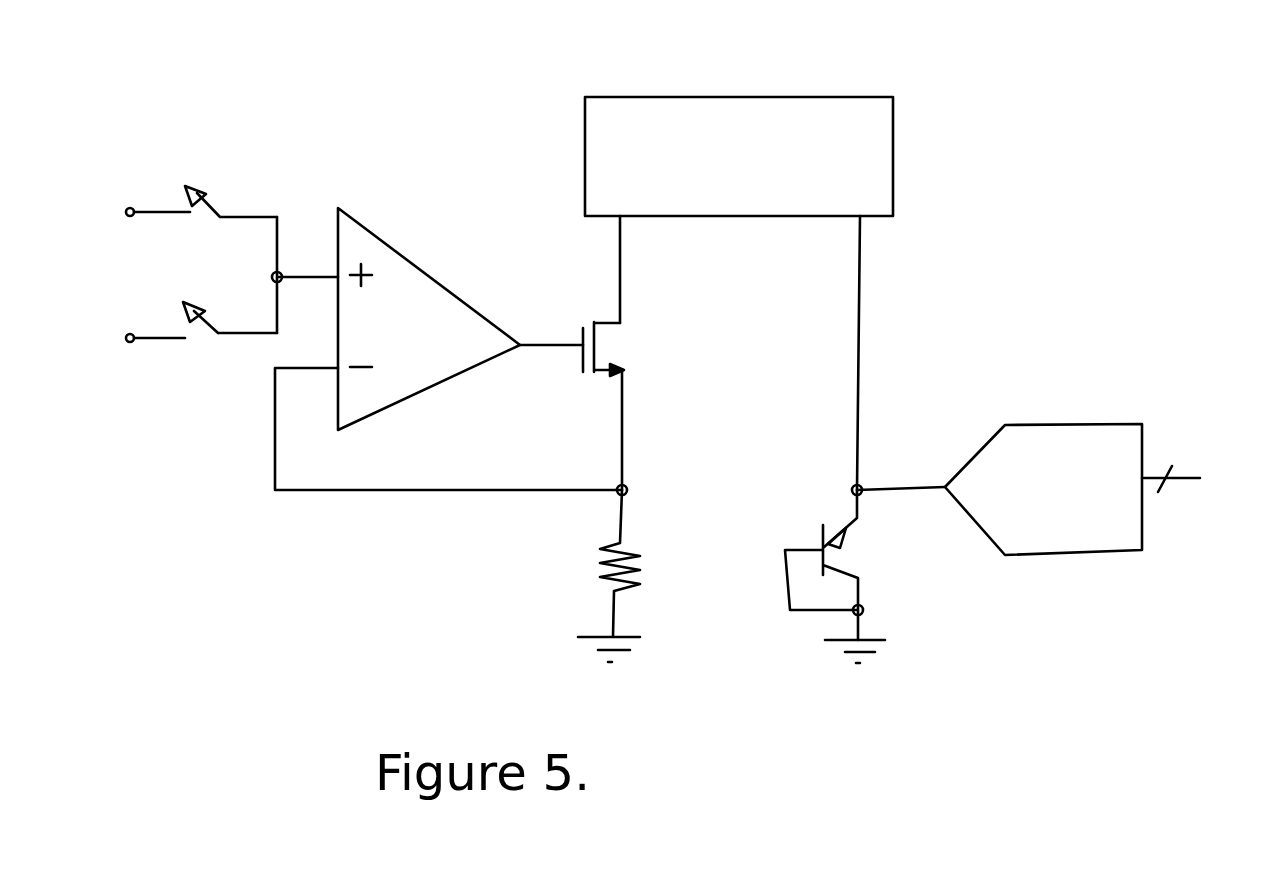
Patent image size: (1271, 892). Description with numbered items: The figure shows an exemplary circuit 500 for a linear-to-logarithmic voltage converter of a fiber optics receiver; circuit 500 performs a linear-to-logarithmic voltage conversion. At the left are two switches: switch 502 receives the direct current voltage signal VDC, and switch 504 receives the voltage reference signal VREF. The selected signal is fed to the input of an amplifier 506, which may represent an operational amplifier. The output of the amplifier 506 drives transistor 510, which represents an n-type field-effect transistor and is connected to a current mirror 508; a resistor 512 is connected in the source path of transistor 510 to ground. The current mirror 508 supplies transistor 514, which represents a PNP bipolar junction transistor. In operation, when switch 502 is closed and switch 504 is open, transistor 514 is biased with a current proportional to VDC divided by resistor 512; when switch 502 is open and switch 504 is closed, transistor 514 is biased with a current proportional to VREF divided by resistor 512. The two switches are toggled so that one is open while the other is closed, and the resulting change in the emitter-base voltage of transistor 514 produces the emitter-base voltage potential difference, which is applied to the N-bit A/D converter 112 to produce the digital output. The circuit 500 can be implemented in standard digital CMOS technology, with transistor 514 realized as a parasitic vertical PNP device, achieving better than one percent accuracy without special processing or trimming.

The circuit 500 is at (775, 730).
The switch 502 is at (195, 166).
The switch 504 is at (203, 345).
The amplifier 506 is at (420, 268).
The current mirror 508 is at (730, 88).
The transistor 510 is at (626, 332).
The resistor 512 is at (590, 568).
The transistor 514 is at (812, 522).
The A/D converter 112 is at (1050, 425).